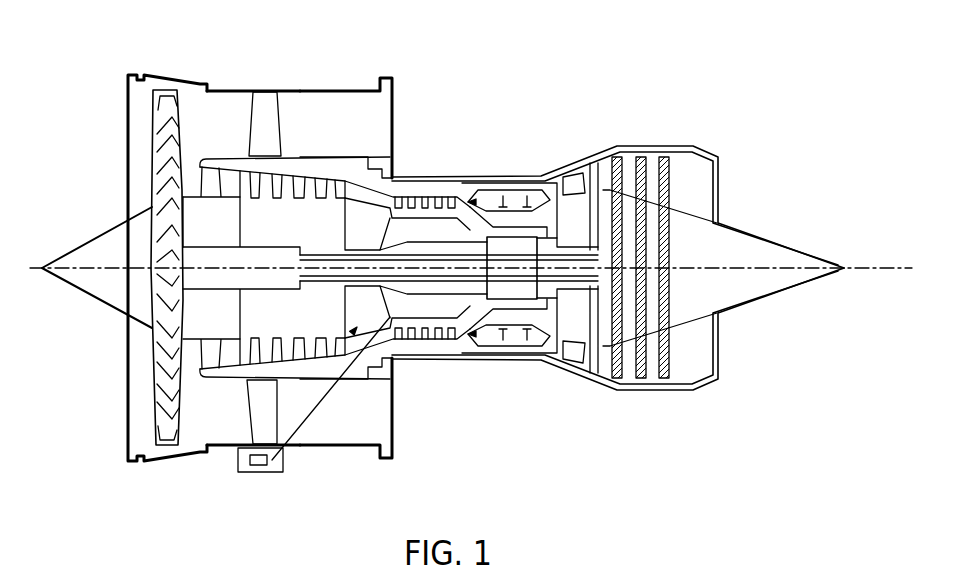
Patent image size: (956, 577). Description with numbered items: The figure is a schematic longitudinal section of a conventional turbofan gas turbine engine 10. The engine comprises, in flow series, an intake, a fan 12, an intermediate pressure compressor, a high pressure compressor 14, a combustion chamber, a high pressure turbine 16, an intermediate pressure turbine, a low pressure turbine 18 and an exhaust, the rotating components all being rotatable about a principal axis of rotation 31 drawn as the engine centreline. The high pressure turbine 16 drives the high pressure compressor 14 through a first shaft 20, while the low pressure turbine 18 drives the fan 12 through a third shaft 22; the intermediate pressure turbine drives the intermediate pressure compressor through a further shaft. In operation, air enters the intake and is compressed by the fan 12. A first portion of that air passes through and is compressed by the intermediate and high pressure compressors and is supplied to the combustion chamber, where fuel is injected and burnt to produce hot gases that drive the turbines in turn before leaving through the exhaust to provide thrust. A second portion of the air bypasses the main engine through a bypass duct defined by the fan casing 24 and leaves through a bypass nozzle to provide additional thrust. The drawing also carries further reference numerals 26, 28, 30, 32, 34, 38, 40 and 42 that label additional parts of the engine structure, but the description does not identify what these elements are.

The turbofan gas turbine engine 10 is at (598, 109).
The fan 12 is at (103, 407).
The high pressure compressor 14 is at (157, 455).
The high pressure turbine 16 is at (167, 393).
The low pressure turbine 18 is at (244, 172).
The first shaft 20 is at (410, 356).
The third shaft 22 is at (512, 357).
The fan casing 24 is at (557, 360).
The low-pressure turbine 26 is at (597, 377).
The exhaust nozzle 28 is at (642, 387).
The core engine exhaust 30 is at (730, 357).
The principal axis of rotation 31 is at (42, 266).
The fan casing 32 is at (241, 86).
The nacelle 34 is at (337, 117).
The low-pressure shaft 38 is at (370, 268).
The high-pressure shaft 40 is at (453, 252).
The bearing 42 is at (508, 233).